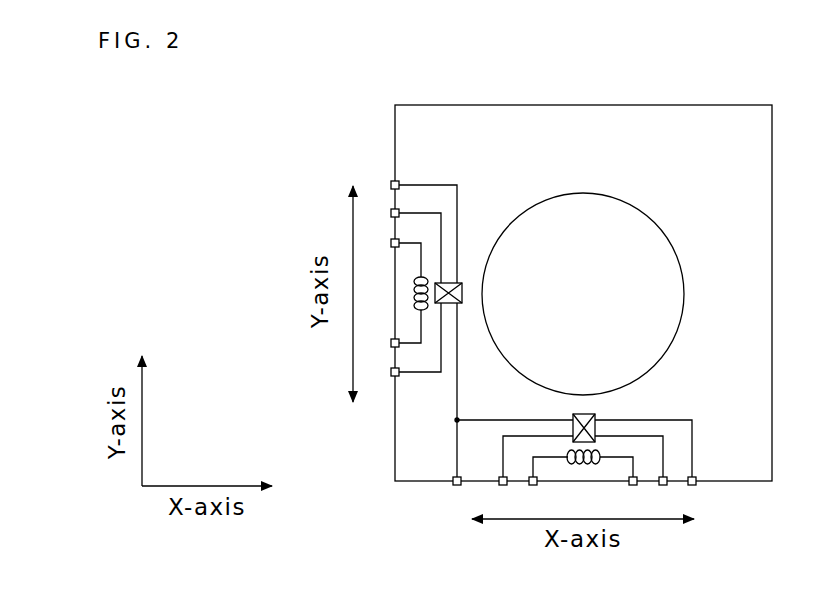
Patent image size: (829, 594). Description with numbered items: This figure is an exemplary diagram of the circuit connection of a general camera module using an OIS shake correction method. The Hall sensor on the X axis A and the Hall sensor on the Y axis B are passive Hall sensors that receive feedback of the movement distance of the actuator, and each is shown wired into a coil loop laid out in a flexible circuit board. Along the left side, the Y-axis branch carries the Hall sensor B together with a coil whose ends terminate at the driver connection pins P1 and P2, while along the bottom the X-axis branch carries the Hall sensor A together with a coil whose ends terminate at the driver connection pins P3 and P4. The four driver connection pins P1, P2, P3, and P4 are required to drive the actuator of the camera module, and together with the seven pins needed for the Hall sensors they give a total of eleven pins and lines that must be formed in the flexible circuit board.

The Hall sensor on the X axis A is at (608, 417).
The Hall sensor on the Y axis B is at (468, 278).
The driver connection pin P1 is at (391, 255).
The driver connection pin P2 is at (391, 334).
The driver connection pin P3 is at (545, 486).
The driver connection pin P4 is at (623, 486).